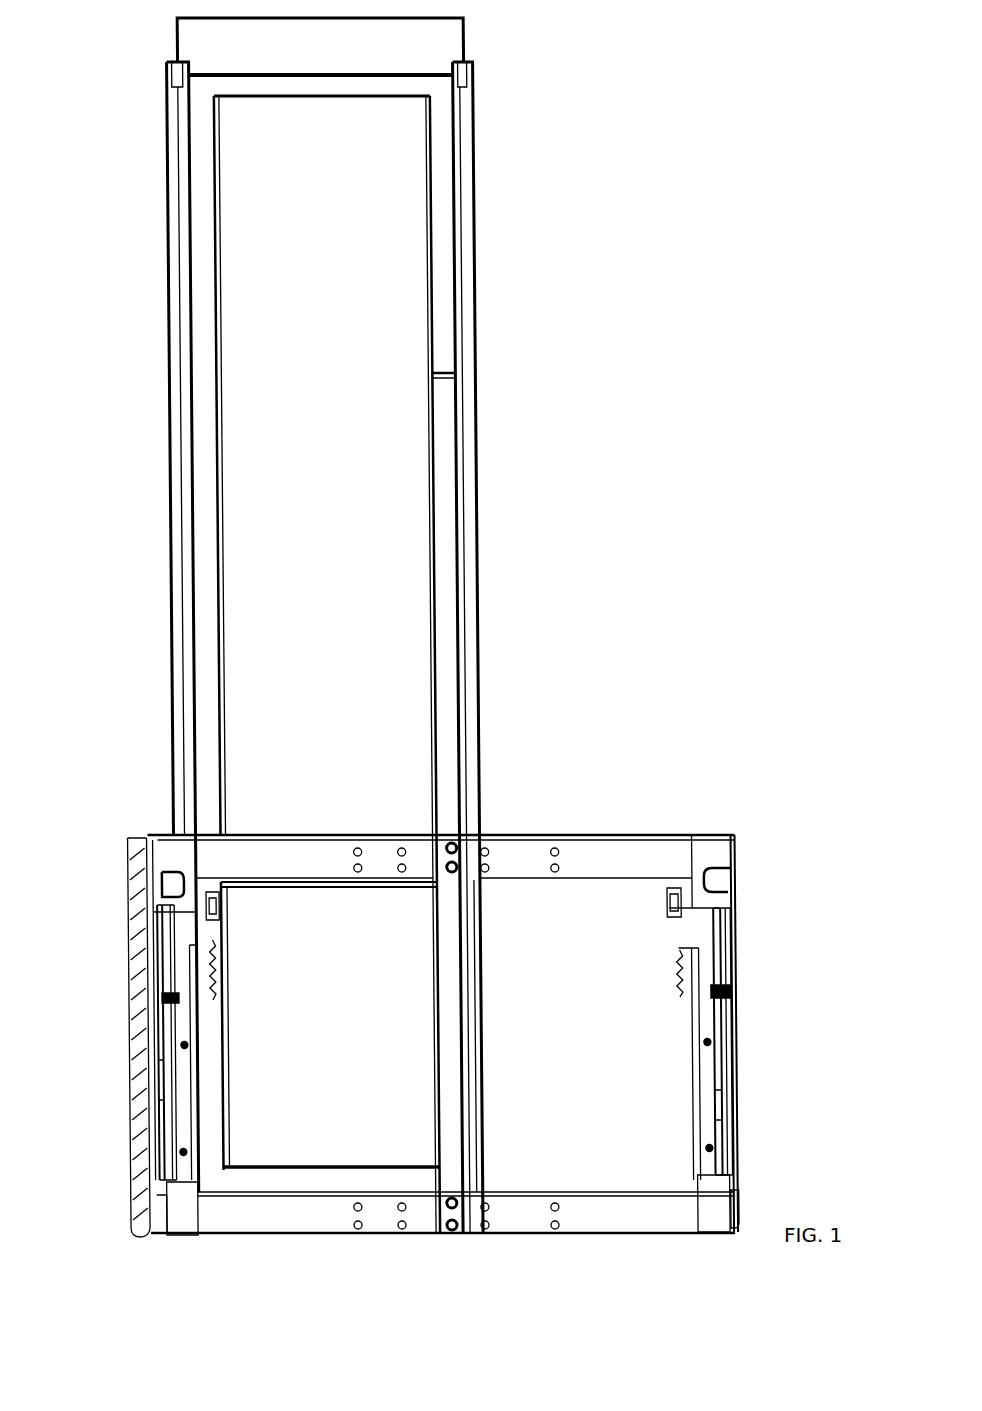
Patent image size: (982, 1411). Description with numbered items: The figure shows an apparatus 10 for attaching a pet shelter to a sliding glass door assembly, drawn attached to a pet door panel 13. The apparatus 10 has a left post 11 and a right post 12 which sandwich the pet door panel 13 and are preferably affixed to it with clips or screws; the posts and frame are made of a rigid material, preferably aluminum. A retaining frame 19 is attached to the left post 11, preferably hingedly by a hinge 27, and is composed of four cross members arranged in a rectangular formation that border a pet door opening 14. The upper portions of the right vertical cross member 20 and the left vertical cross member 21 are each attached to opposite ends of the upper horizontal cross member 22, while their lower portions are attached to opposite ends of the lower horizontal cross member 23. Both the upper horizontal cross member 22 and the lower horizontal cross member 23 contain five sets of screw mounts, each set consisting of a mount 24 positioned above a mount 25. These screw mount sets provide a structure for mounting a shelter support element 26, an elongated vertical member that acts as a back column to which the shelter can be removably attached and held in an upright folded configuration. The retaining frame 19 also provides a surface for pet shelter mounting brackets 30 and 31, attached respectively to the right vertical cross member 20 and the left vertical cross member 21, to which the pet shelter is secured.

The apparatus 10 is at (450, 628).
The left post 11 is at (179, 100).
The right post 12 is at (466, 88).
The pet door panel 13 is at (273, 236).
The pet door opening 14 is at (361, 1023).
The retaining frame 19 is at (728, 835).
The right vertical cross member 20 is at (712, 876).
The left vertical cross member 21 is at (169, 1205).
The upper horizontal cross member 22 is at (624, 862).
The lower horizontal cross member 23 is at (594, 1220).
The screw mount 24 is at (347, 852).
The screw mount 25 is at (347, 868).
The shelter support element 26 is at (441, 437).
The hinge 27 is at (137, 868).
The pet shelter mounting bracket 30 is at (694, 920).
The pet shelter mounting bracket 31 is at (174, 932).